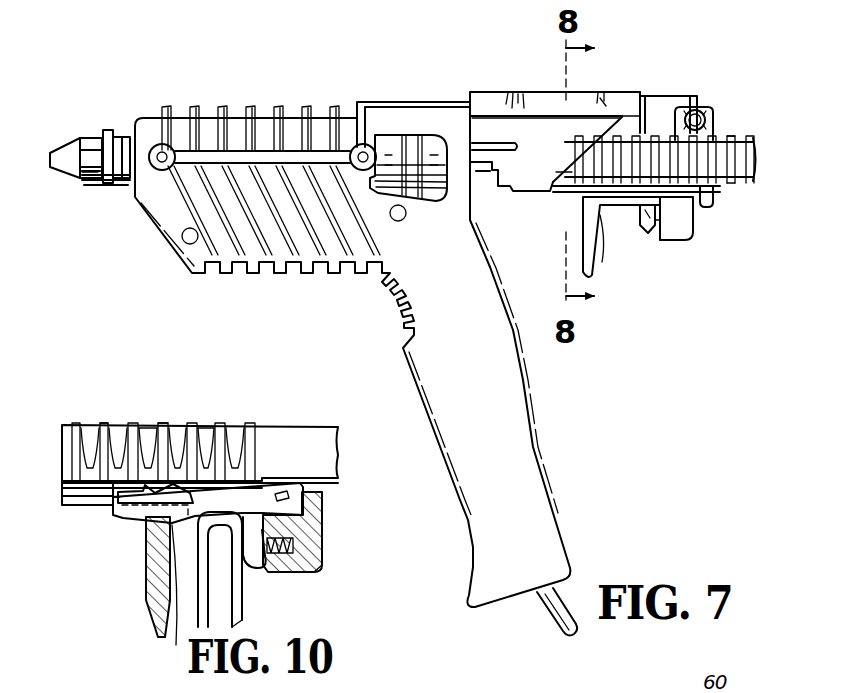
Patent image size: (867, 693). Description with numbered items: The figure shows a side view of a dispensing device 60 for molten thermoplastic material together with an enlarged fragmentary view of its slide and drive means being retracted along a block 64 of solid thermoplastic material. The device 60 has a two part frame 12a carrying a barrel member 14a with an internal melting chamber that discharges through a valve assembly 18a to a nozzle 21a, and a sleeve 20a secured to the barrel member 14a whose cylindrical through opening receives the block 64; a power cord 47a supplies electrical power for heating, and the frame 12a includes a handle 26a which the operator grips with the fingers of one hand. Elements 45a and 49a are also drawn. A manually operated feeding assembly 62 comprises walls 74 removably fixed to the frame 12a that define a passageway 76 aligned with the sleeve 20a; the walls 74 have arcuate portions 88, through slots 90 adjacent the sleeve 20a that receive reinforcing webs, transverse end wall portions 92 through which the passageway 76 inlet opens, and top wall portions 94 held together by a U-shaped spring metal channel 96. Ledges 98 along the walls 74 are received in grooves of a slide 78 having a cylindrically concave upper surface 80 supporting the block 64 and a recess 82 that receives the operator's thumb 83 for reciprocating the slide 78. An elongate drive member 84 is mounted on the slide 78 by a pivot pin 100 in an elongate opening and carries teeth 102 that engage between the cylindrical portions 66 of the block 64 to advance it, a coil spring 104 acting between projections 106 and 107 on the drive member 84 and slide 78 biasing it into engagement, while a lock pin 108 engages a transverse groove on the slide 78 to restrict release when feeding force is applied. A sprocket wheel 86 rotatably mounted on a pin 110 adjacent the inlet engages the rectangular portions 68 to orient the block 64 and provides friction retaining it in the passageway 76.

In FIG. 7, the frame 12a is at (538, 422).
In FIG. 7, the barrel member 14a is at (123, 130).
In FIG. 7, the valve assembly 18a is at (93, 184).
In FIG. 7, the sleeve 20a is at (440, 150).
In FIG. 7, the nozzle 21a is at (60, 150).
In FIG. 7, the handle 26a is at (472, 527).
In FIG. 7, the lever block 45a is at (403, 140).
In FIG. 7, the power cord 47a is at (550, 624).
In FIG. 7, the nut 49a is at (91, 137).
In FIG. 7, the dispensing device 60 is at (376, 88).
In FIG. 7, the feeding assembly 62 is at (677, 248).
In FIG. 10, the feeding assembly 62 is at (325, 525).
In FIG. 7, the block of solid thermoplastic material 64 is at (758, 143).
In FIG. 10, the block of solid thermoplastic material 64 is at (218, 425).
In FIG. 7, the cylindrical portions 66 is at (727, 183).
In FIG. 10, the cylindrical portions 66 is at (192, 433).
In FIG. 7, the rectangular portions 68 is at (733, 140).
In FIG. 10, the rectangular portions 68 is at (145, 440).
In FIG. 7, the walls 74 is at (513, 194).
In FIG. 7, the passageway 76 is at (623, 133).
In FIG. 10, the passageway 76 is at (330, 443).
In FIG. 7, the slide 78 is at (590, 207).
In FIG. 10, the slide 78 is at (150, 532).
In FIG. 7, the upper surface 80 is at (658, 237).
In FIG. 10, the upper surface 80 is at (265, 481).
In FIG. 7, the recess 82 is at (608, 262).
In FIG. 10, the recess 82 is at (173, 643).
In FIG. 10, the thumb 83 is at (243, 615).
In FIG. 7, the drive member 84 is at (567, 193).
In FIG. 10, the drive member 84 is at (135, 503).
In FIG. 7, the sprocket wheel 86 is at (703, 113).
In FIG. 7, the arcuate portions 88 is at (530, 110).
In FIG. 7, the through slots 90 is at (502, 145).
In FIG. 7, the end wall portions 92 is at (713, 203).
In FIG. 7, the top wall portions 94 is at (677, 103).
In FIG. 7, the spring metal channel 96 is at (577, 102).
In FIG. 10, the ledges 98 is at (70, 497).
In FIG. 10, the pivot pin 100 is at (333, 485).
In FIG. 7, the teeth 102 is at (570, 173).
In FIG. 10, the teeth 102 is at (117, 497).
In FIG. 7, the coil spring 104 is at (647, 253).
In FIG. 10, the coil spring 104 is at (276, 556).
In FIG. 7, the projection 106 is at (653, 222).
In FIG. 10, the projection 106 is at (262, 572).
In FIG. 7, the projection 107 is at (693, 233).
In FIG. 10, the projection 107 is at (318, 561).
In FIG. 10, the lock pin 108 is at (203, 530).
In FIG. 7, the pin 110 is at (700, 107).